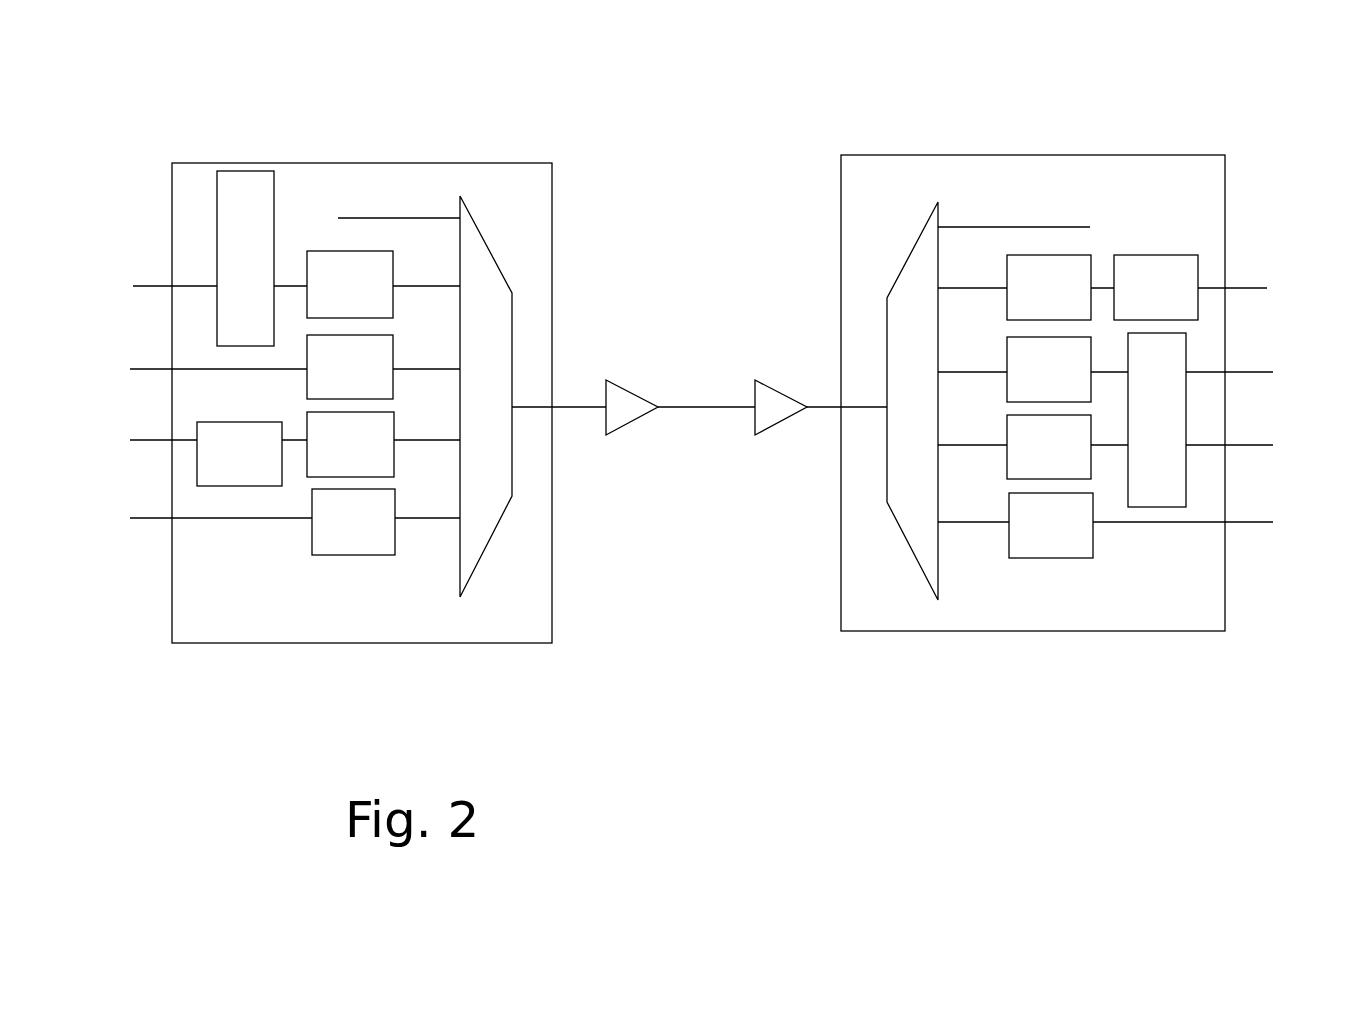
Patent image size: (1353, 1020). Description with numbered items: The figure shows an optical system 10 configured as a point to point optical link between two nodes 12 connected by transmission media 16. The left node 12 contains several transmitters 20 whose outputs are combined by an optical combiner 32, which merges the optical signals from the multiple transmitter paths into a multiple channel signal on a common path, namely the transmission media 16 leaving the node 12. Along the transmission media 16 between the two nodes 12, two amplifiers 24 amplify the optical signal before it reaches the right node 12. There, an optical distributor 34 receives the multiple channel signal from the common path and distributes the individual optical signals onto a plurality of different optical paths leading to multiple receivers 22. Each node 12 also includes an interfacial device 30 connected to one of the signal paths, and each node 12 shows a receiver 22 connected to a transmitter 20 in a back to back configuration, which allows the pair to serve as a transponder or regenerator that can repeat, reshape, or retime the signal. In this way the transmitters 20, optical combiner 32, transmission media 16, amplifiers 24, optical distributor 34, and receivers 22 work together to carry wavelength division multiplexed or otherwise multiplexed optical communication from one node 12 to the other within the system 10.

The optical system 10 is at (1162, 778).
The node 12 is at (377, 163).
The transmission media 16 is at (572, 400).
The transmitter 20 is at (360, 555).
The receiver 22 is at (207, 423).
The amplifier 24 is at (778, 385).
The interfacial device 30 is at (238, 171).
The optical combiner 32 is at (483, 550).
The optical distributor 34 is at (907, 532).